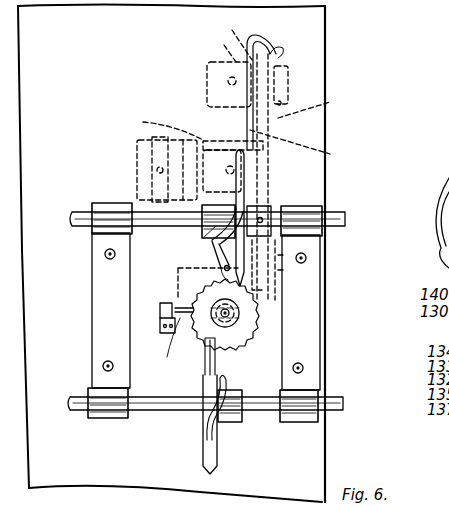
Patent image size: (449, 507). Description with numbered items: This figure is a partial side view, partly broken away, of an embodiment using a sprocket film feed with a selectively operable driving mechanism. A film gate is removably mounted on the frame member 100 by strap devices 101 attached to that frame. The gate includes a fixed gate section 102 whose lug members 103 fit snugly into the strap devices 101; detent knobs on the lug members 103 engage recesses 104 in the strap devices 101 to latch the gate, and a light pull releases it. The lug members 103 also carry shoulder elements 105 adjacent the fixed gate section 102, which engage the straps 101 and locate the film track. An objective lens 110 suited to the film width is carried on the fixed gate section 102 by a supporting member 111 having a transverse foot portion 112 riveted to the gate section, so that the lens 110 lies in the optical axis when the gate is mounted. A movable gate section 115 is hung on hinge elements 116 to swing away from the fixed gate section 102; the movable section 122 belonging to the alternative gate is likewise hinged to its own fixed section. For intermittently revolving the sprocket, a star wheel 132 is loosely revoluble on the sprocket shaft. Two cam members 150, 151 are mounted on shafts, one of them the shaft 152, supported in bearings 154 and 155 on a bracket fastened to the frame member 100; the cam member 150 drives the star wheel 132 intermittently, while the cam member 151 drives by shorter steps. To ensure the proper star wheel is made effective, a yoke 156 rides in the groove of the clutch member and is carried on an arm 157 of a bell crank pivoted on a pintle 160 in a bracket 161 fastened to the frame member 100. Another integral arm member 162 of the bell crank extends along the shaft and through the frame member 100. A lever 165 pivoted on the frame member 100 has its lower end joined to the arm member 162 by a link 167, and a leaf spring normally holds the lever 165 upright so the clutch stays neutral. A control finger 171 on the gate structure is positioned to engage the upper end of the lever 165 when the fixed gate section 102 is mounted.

The frame member 100 is at (280, 54).
The strap devices 101 is at (210, 66).
The fixed gate section 102 is at (252, 40).
The lug members 103 is at (206, 78).
The recesses 104 is at (216, 45).
The shoulder elements 105 is at (227, 36).
The objective lens 110 is at (137, 158).
The supporting member 111 is at (161, 129).
The transverse foot portion 112 is at (306, 149).
The movable gate section 115 is at (321, 105).
The hinge elements 116 is at (289, 74).
The movable section 122 is at (326, 46).
The star wheel 132 is at (262, 318).
The cam member 150 is at (246, 184).
The cam member 151 is at (218, 449).
The shaft 152 is at (331, 215).
The bearings 154 is at (100, 228).
The bearings 155 is at (100, 398).
The yoke 156 is at (205, 344).
The arm 157 is at (161, 349).
The pintle 160 is at (160, 305).
The bracket 161 is at (160, 325).
The arm member 162 is at (132, 275).
The lever 165 is at (208, 253).
The link 167 is at (178, 264).
The control finger 171 is at (190, 233).